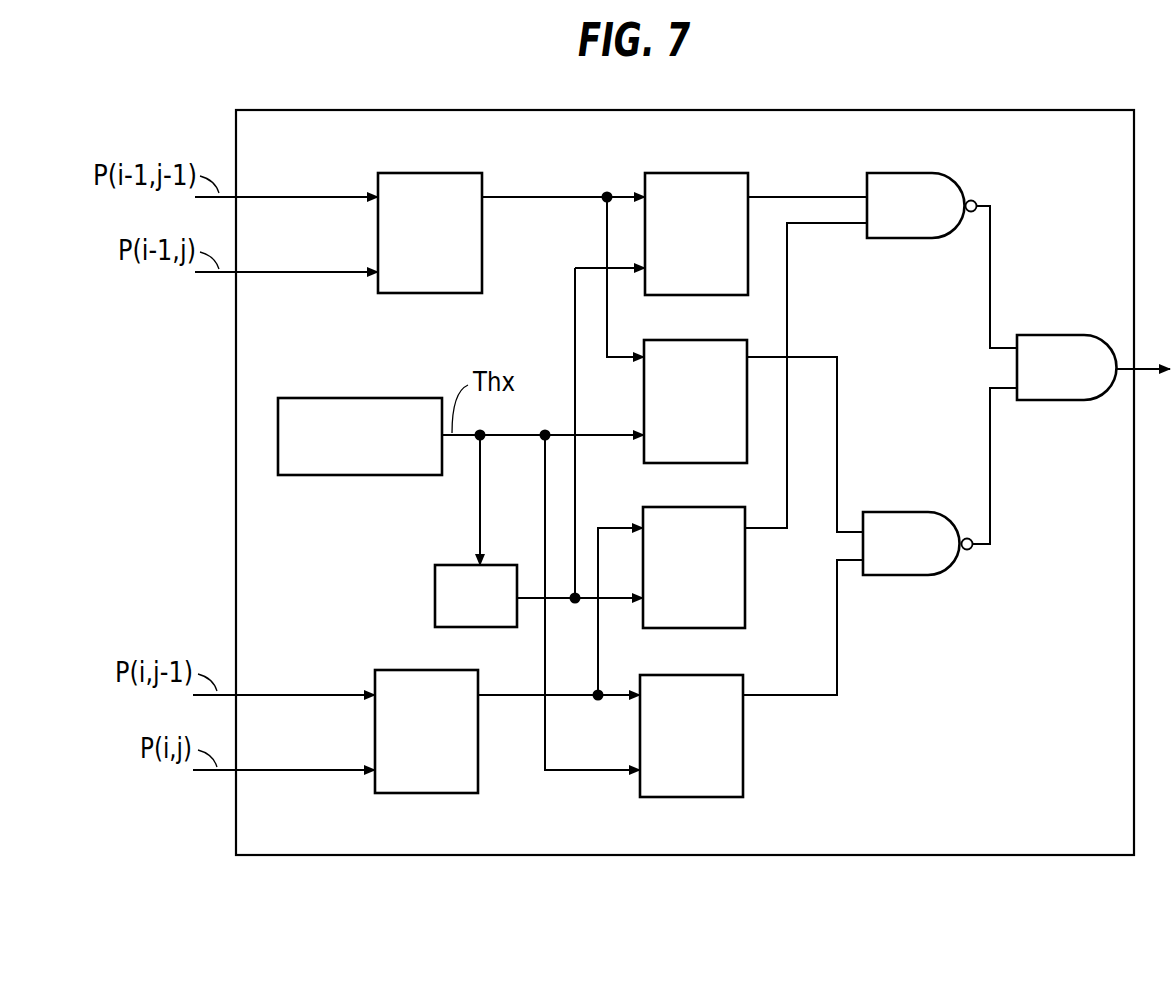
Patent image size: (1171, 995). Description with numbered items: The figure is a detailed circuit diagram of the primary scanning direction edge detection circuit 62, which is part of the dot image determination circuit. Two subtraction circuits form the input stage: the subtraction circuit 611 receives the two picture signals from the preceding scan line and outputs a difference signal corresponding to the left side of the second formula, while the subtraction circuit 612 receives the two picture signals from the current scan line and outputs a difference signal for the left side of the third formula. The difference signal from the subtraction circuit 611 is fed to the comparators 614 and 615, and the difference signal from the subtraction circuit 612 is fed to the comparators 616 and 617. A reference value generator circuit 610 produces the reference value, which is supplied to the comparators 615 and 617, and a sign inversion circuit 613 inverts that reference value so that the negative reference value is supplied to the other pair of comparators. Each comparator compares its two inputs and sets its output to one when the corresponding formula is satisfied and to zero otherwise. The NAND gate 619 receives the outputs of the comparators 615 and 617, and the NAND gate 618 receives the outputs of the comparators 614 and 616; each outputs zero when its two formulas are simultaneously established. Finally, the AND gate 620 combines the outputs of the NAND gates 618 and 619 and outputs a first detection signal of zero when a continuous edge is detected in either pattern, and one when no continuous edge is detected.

The primary scanning direction edge detection circuit 62 is at (852, 856).
The reference value generator circuit 610 is at (343, 398).
The subtraction circuit 611 is at (413, 294).
The subtraction circuit 612 is at (410, 794).
The sign inversion circuit 613 is at (460, 565).
The comparator 614 is at (690, 173).
The comparator 615 is at (688, 340).
The comparator 616 is at (686, 507).
The comparator 617 is at (683, 675).
The NAND gate 618 is at (922, 173).
The NAND gate 619 is at (878, 512).
The AND gate 620 is at (1030, 335).